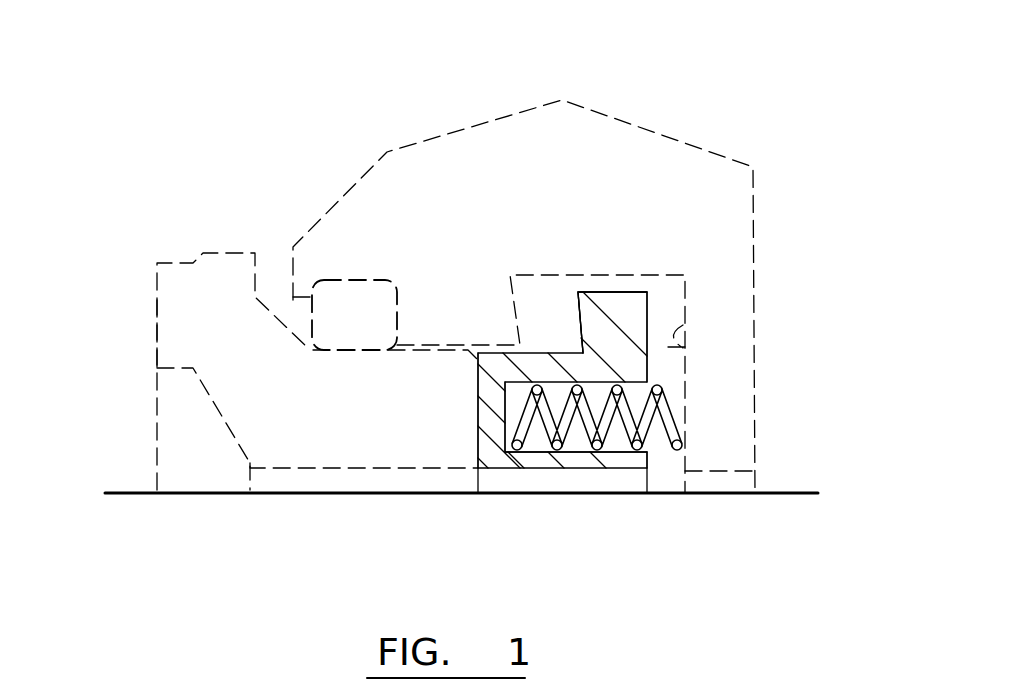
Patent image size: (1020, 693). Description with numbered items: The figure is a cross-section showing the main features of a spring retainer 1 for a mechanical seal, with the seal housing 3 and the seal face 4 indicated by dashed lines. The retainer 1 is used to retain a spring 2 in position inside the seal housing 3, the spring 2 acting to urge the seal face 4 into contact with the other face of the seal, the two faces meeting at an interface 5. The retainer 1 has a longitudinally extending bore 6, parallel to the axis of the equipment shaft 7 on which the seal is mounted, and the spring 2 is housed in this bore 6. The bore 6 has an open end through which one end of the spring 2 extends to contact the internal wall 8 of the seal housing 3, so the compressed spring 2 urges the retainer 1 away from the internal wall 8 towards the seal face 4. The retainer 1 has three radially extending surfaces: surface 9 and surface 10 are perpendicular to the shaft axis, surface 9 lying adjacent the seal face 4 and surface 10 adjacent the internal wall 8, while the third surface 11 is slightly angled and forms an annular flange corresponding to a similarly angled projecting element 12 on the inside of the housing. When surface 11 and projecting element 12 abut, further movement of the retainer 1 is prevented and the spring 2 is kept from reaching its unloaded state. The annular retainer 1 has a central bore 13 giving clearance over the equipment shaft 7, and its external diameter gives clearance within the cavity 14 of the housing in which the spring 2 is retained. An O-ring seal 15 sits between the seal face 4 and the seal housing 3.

The spring retainer 1 is at (637, 312).
The spring 2 is at (665, 410).
The seal housing 3 is at (625, 173).
The seal face 4 is at (217, 298).
The interface 5 is at (153, 297).
The bore 6 is at (617, 438).
The equipment shaft 7 is at (467, 600).
The internal wall 8 is at (685, 322).
The radially extending surface 9 is at (478, 422).
The radially extending surface 10 is at (648, 460).
The radially extending surface 11 is at (577, 307).
The projecting element 12 is at (510, 298).
The central bore 13 is at (587, 483).
The cavity 14 is at (607, 292).
The O-ring seal 15 is at (355, 325).